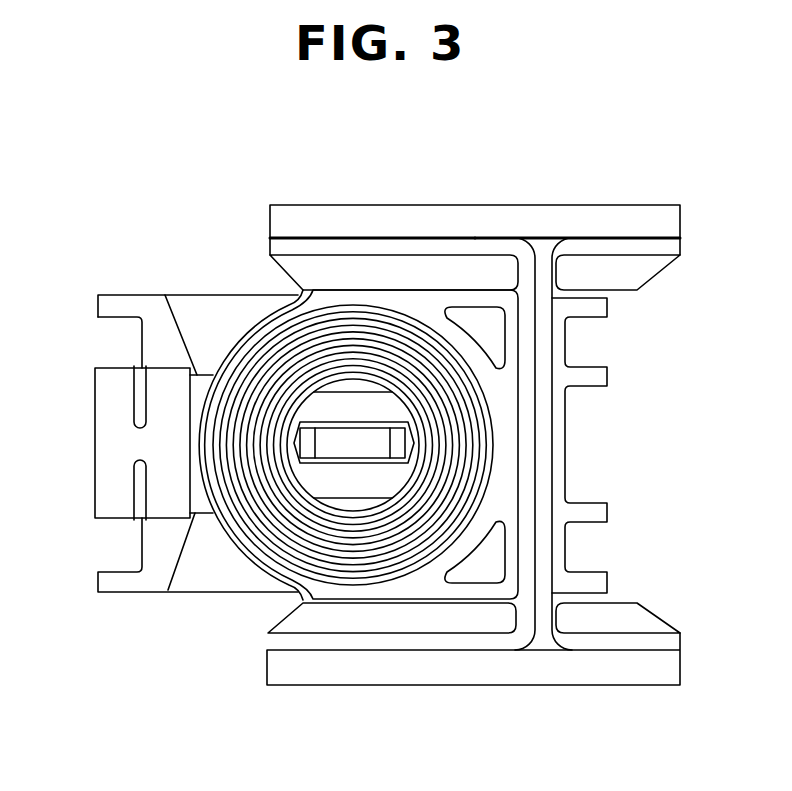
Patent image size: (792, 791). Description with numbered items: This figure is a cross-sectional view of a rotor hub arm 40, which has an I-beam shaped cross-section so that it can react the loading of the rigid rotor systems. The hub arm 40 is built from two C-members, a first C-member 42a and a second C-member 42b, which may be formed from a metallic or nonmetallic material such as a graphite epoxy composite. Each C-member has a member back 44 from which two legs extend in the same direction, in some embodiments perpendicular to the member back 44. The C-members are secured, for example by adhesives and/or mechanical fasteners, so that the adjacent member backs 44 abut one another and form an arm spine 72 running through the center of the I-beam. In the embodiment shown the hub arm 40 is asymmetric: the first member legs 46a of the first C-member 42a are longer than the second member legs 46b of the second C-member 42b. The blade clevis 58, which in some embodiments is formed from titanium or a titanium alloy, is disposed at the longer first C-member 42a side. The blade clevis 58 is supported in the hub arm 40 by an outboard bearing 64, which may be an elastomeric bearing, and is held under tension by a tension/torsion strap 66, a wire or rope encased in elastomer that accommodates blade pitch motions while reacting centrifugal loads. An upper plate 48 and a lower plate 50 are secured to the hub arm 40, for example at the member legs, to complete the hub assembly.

The hub arm 40 is at (190, 196).
The first C-member 42a is at (376, 246).
The second C-member 42b is at (638, 246).
The member back 44 is at (527, 338).
The first member legs 46a is at (280, 248).
The second member legs 46b is at (672, 244).
The upper plate 48 is at (496, 222).
The lower plate 50 is at (463, 670).
The blade clevis 58 is at (152, 307).
The outboard bearing 64 is at (233, 525).
The tension/torsion strap 66 is at (322, 412).
The arm spine 72 is at (537, 272).